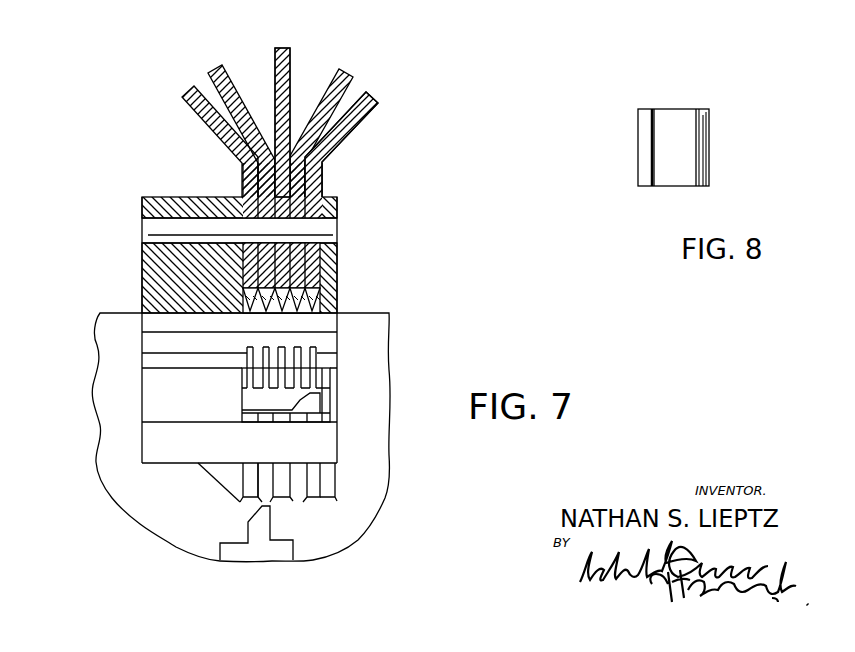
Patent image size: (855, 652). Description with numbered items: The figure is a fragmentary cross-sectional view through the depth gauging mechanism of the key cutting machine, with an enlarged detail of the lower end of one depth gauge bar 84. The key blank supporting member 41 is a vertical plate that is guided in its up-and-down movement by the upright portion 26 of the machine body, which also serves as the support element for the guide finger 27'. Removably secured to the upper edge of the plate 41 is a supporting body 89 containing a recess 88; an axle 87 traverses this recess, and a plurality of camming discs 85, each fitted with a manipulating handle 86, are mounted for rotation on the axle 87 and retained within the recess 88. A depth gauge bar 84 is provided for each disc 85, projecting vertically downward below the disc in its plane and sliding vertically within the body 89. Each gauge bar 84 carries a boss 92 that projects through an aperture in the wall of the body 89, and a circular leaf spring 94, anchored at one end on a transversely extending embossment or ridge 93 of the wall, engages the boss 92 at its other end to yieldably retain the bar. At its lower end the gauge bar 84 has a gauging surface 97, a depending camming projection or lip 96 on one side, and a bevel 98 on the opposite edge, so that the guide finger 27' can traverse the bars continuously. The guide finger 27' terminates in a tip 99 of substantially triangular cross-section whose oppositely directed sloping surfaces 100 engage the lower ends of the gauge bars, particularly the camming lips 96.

In FIG. 7, the key blank supporting member 41 is at (105, 437).
In FIG. 7, the axle 87 is at (142, 226).
In FIG. 7, the recess 88 is at (328, 255).
In FIG. 7, the depth gauge bar 84 is at (312, 303).
In FIG. 8, the depth gauge bar 84 is at (672, 186).
In FIG. 7, the supporting body 89 is at (337, 286).
In FIG. 7, the camming disc 85 is at (320, 183).
In FIG. 7, the manipulating handle 86 is at (342, 82).
In FIG. 7, the embossment or ridge 93 is at (148, 360).
In FIG. 7, the circular leaf spring 94 is at (250, 400).
In FIG. 7, the boss 92 is at (312, 400).
In FIG. 7, the guide finger 27' is at (264, 530).
In FIG. 7, the upright portion 26 is at (257, 555).
In FIG. 7, the sloping surfaces 100 is at (253, 504).
In FIG. 7, the tip 99 is at (258, 515).
In FIG. 7, the camming projection or lip 96 is at (275, 500).
In FIG. 8, the camming projection or lip 96 is at (638, 129).
In FIG. 7, the gauging surface 97 is at (292, 500).
In FIG. 8, the gauging surface 97 is at (678, 115).
In FIG. 7, the bevel 98 is at (318, 500).
In FIG. 8, the bevel 98 is at (703, 123).